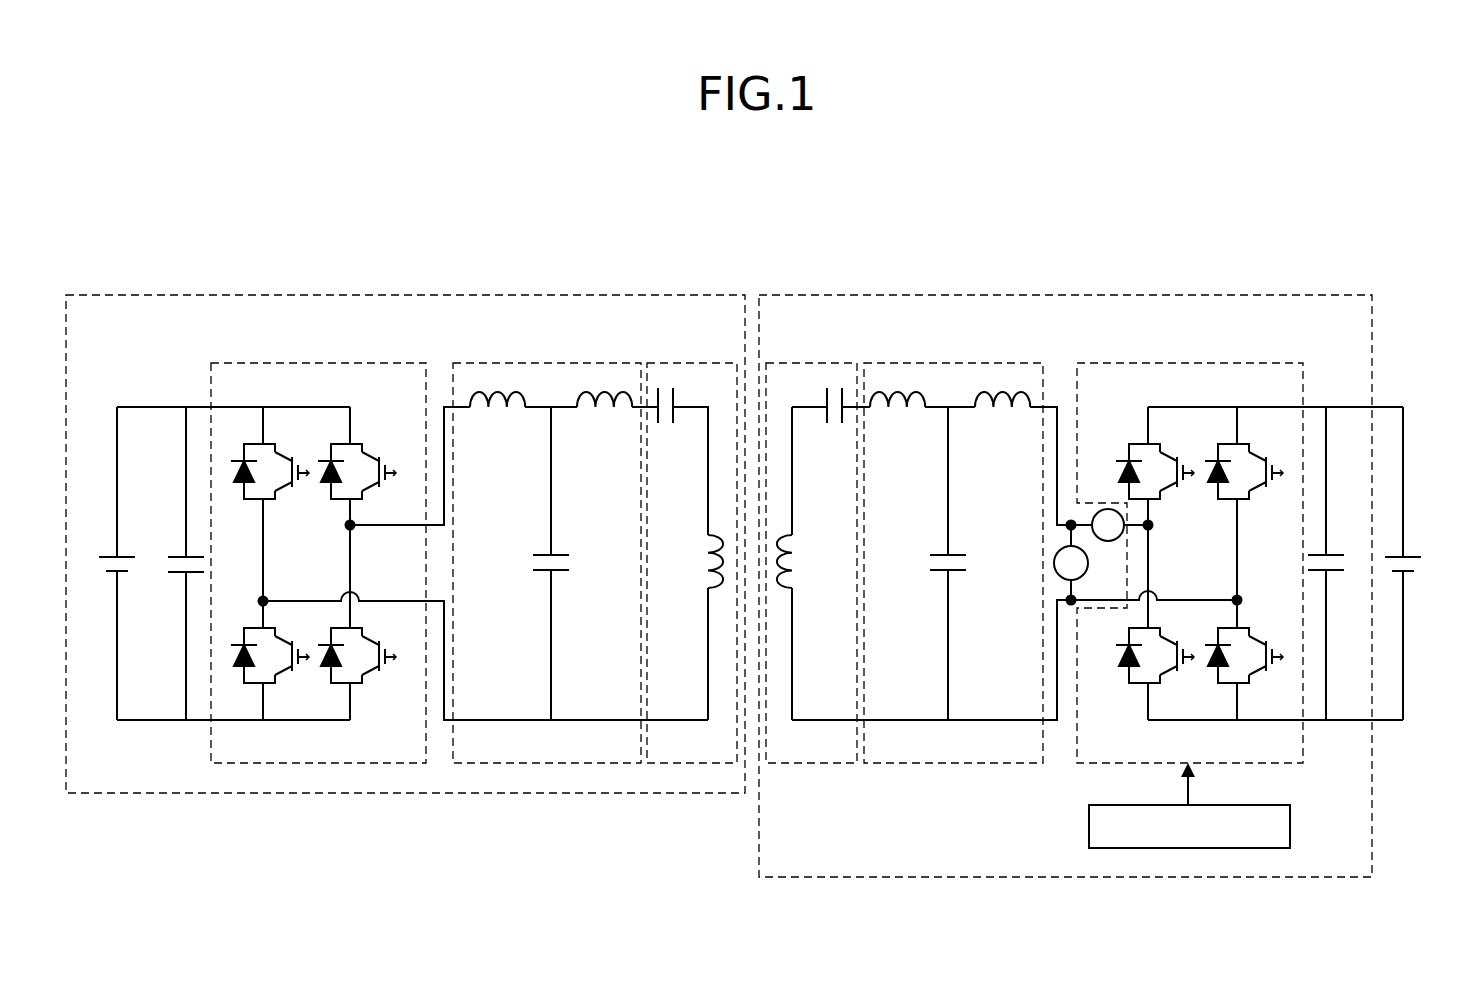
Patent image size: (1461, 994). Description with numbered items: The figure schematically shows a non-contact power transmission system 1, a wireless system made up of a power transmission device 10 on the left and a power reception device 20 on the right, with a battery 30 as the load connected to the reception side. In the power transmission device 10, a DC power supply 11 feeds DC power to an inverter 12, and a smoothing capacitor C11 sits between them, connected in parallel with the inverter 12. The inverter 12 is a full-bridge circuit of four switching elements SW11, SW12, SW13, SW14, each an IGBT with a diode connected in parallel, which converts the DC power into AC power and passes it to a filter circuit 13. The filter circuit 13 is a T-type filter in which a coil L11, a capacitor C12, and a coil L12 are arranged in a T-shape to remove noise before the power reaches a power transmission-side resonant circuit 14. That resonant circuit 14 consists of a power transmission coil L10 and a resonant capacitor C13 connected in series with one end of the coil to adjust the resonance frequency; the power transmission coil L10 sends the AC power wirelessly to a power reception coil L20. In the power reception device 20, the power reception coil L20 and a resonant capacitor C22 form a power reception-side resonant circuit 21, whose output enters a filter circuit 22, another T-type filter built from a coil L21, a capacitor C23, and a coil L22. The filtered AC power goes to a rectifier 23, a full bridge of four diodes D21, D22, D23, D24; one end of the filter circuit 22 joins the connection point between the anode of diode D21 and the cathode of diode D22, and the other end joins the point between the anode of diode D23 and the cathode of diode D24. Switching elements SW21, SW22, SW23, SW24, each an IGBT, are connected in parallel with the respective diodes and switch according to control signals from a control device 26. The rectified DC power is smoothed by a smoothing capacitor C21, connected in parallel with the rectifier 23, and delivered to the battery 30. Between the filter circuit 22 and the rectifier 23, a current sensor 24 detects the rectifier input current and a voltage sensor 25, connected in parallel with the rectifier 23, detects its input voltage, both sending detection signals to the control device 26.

The non-contact power transmission system 1 is at (1164, 184).
The power transmission device 10 is at (409, 295).
The DC power supply 11 is at (110, 552).
The inverter 12 is at (322, 363).
The filter circuit 13 is at (548, 363).
The power transmission-side resonant circuit 14 is at (720, 363).
The power reception device 20 is at (1037, 295).
The power reception-side resonant circuit 21 is at (789, 363).
The filter circuit 22 is at (958, 363).
The rectifier 23 is at (1192, 363).
The current sensor 24 is at (1107, 508).
The voltage sensor 25 is at (1054, 563).
The control device 26 is at (1218, 805).
The battery 30 is at (1415, 553).
The smoothing capacitor C11 is at (176, 552).
The capacitor C12 is at (543, 553).
The resonant capacitor C13 is at (673, 388).
The smoothing capacitor C21 is at (1337, 553).
The resonant capacitor C22 is at (843, 388).
The capacitor C23 is at (960, 553).
The power transmission coil L10 is at (706, 572).
The coil L11 is at (510, 410).
The coil L12 is at (617, 410).
The power reception coil L20 is at (794, 572).
The coil L21 is at (910, 410).
The coil L22 is at (1015, 410).
The switching element SW11 is at (307, 477).
The switching element SW12 is at (307, 655).
The switching element SW13 is at (393, 477).
The switching element SW14 is at (393, 655).
The switching element SW21 is at (1195, 478).
The switching element SW22 is at (1193, 660).
The switching element SW23 is at (1278, 473).
The switching element SW24 is at (1278, 655).
The diode D21 is at (1125, 458).
The diode D22 is at (1127, 668).
The diode D23 is at (1215, 458).
The diode D24 is at (1225, 672).